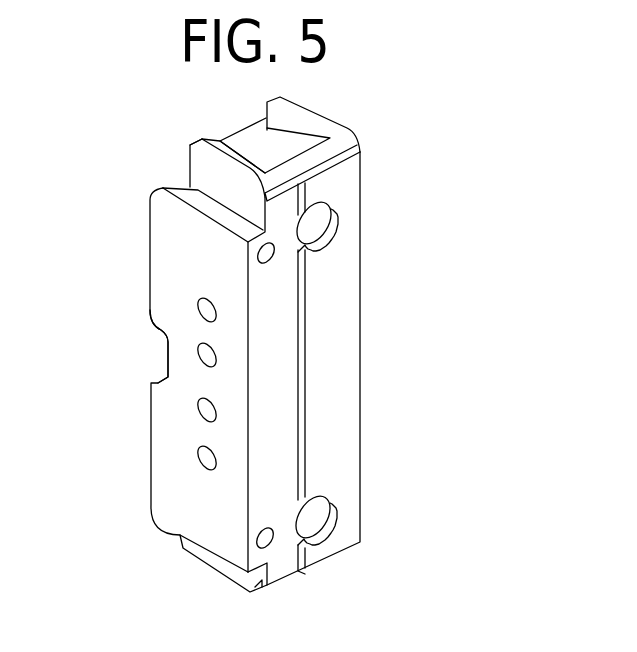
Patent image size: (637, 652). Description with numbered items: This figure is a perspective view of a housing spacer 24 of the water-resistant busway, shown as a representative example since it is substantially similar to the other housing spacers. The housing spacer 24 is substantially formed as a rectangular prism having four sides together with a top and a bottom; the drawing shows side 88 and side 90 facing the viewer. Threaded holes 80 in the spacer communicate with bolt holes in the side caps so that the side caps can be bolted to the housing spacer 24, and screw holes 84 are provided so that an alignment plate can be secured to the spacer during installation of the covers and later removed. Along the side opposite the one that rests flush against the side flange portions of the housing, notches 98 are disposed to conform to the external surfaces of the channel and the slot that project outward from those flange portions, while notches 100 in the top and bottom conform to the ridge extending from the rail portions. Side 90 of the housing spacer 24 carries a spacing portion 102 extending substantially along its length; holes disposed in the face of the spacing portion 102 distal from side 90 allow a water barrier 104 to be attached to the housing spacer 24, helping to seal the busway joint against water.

The housing spacer 24 is at (521, 262).
The threaded holes 80 is at (321, 220).
The screw holes 84 is at (268, 264).
The side 88 is at (333, 376).
The side 90 is at (202, 173).
The notches 98 is at (185, 153).
The notches 100 is at (342, 142).
The spacing portion 102 is at (162, 292).
The water barrier 104 is at (212, 318).